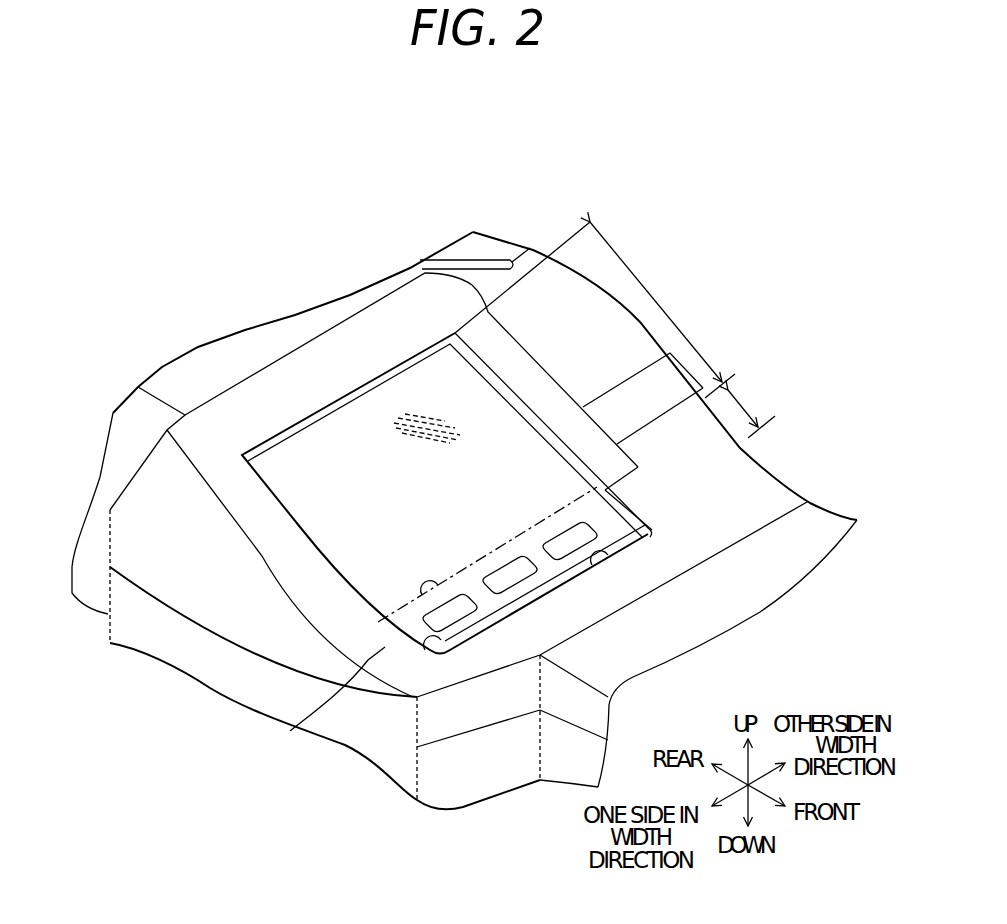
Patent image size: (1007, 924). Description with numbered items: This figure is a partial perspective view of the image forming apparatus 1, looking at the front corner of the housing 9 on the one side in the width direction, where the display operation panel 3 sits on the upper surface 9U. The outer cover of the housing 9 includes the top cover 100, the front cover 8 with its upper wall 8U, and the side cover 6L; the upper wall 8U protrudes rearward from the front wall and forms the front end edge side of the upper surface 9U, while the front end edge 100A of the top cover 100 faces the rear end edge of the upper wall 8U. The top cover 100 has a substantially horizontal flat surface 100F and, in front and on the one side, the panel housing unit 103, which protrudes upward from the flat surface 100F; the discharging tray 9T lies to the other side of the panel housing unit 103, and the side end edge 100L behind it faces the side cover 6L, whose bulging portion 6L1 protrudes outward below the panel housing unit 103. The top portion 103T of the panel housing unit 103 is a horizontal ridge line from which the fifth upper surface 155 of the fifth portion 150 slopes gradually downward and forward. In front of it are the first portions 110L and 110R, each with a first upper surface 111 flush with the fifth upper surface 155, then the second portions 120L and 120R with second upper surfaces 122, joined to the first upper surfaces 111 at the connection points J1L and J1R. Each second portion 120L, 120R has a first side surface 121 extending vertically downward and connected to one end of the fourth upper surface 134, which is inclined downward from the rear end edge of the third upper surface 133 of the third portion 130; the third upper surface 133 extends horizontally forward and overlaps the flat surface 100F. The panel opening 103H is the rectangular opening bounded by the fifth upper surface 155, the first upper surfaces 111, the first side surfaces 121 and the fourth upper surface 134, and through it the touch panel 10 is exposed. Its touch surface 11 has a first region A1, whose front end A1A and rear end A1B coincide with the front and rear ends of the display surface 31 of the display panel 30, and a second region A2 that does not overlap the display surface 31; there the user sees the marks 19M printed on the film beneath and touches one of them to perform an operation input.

The image forming apparatus 1 is at (757, 300).
The display operation panel 3 is at (403, 463).
The front cover 8 is at (795, 585).
The upper wall 8U is at (788, 558).
The housing 9 is at (145, 366).
The discharging tray 9T is at (466, 250).
The upper surface 9U is at (753, 503).
The touch panel 10 is at (487, 527).
The touch surface 11 is at (450, 553).
The marks 19M is at (447, 613).
The display panel 30 is at (377, 490).
The display surface 31 is at (348, 513).
The top cover 100 is at (205, 372).
The front end edge 100A is at (852, 524).
The flat surface 100F is at (715, 504).
The side end edge 100L is at (160, 402).
The panel housing unit 103 is at (373, 304).
The top portion 103T is at (337, 327).
The panel opening 103H is at (515, 418).
The first portion 110L is at (257, 524).
The first portion 110R is at (507, 358).
The first upper surface 111 is at (290, 557).
The second portion 120L is at (290, 731).
The second portion 120R is at (633, 490).
The first side surface 121 is at (657, 538).
The second upper surface 122 is at (633, 505).
The third portion 130 is at (640, 597).
The third upper surface 133 is at (632, 682).
The fourth upper surface 134 is at (588, 600).
The fifth portion 150 is at (305, 371).
The fifth upper surface 155 is at (275, 393).
The side cover 6L is at (120, 471).
The bulging portion 6L1 is at (148, 632).
The first region A1 is at (595, 310).
The second region A2 is at (751, 407).
The front end A1A is at (418, 592).
The rear end A1B is at (407, 368).
The connection point J1L is at (383, 651).
The connection point J1R is at (617, 478).